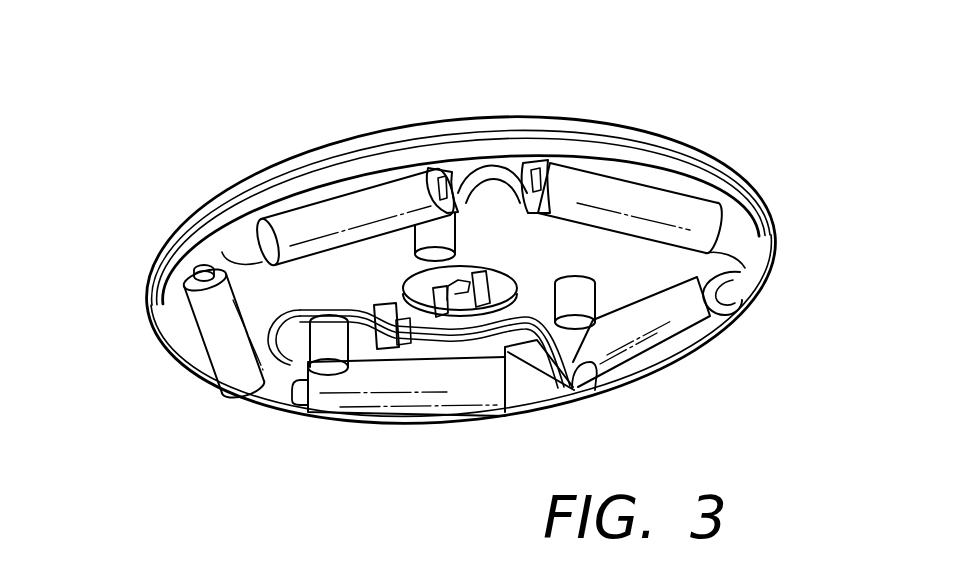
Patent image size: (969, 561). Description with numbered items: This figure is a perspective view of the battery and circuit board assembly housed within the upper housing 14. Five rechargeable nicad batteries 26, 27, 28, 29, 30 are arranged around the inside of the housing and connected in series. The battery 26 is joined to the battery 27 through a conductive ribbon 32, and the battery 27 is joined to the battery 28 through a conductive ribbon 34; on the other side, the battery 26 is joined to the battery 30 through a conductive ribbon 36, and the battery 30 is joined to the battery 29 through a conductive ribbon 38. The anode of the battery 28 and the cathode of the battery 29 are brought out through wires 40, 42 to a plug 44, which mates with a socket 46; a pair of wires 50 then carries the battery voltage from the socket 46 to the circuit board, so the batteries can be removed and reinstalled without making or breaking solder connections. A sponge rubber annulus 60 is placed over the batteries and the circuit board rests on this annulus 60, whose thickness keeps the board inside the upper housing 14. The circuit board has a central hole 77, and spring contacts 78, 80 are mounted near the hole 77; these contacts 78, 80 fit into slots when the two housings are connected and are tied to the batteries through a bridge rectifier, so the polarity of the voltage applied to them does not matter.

The upper housing 14 is at (150, 247).
The battery 26 is at (315, 217).
The battery 27 is at (640, 193).
The battery 28 is at (684, 322).
The battery 29 is at (345, 393).
The battery 30 is at (213, 350).
The conductive ribbon 32 is at (458, 190).
The conductive ribbon 34 is at (748, 270).
The conductive ribbon 36 is at (233, 257).
The conductive ribbon 38 is at (280, 412).
The wire 40 is at (592, 393).
The wire 42 is at (478, 352).
The plug 44 is at (400, 352).
The socket 46 is at (377, 352).
The pair of wires 50 is at (369, 304).
The sponge rubber annulus 60 is at (533, 151).
The central hole 77 is at (503, 270).
The spring contact 78 is at (481, 273).
The spring contact 80 is at (412, 312).